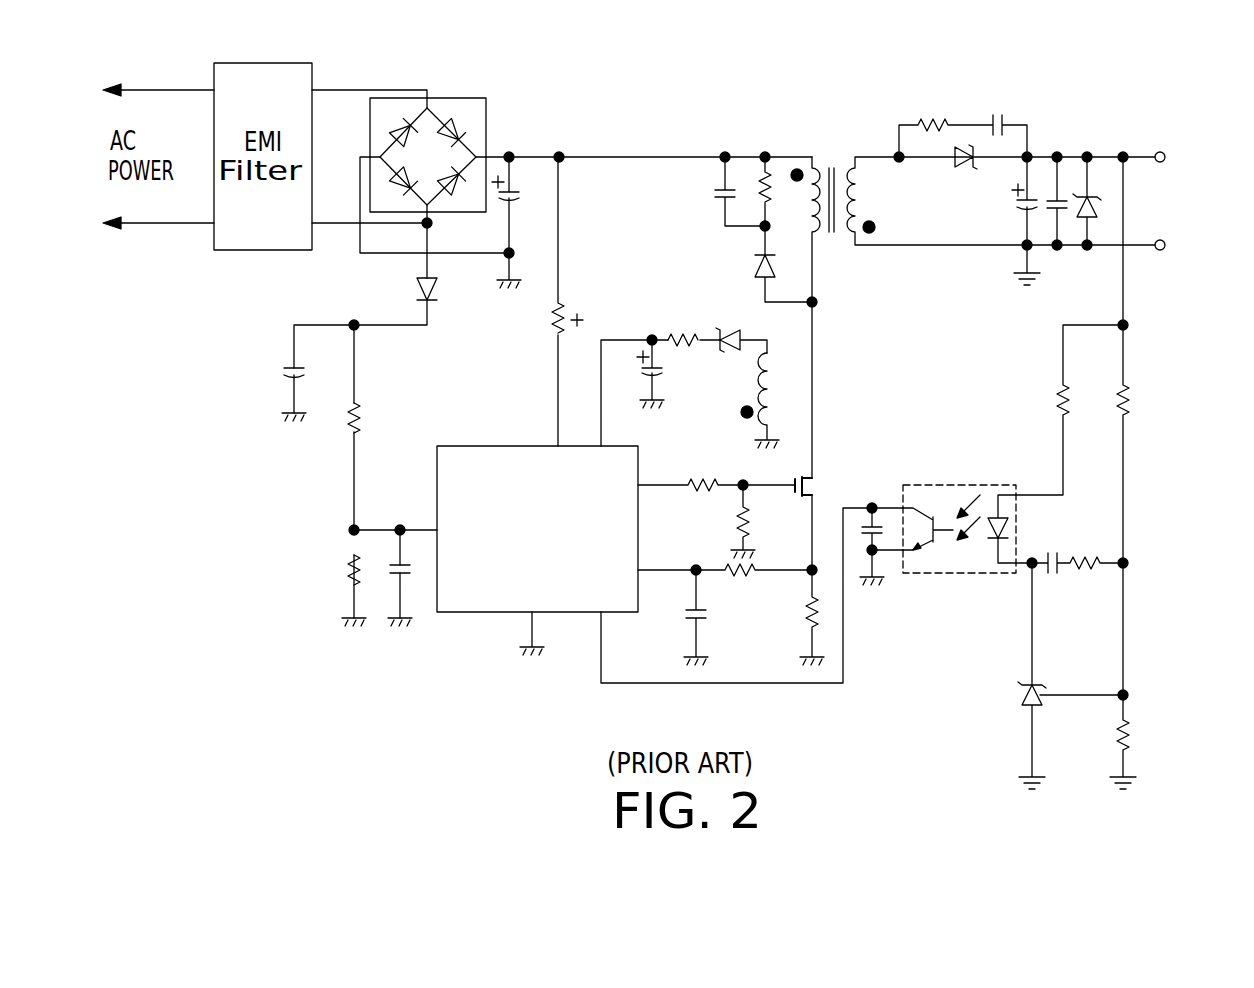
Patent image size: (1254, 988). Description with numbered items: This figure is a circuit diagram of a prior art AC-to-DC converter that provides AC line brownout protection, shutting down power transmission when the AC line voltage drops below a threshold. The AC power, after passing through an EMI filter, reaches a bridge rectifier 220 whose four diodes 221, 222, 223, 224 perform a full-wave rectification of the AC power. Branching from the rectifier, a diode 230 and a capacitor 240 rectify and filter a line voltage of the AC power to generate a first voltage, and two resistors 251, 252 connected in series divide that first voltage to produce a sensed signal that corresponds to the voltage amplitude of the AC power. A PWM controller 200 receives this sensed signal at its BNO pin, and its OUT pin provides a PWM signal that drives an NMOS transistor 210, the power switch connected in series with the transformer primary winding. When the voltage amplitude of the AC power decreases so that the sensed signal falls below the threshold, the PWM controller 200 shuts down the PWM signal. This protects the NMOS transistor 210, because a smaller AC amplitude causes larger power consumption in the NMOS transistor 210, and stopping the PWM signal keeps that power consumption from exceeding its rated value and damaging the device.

The PWM controller 200 is at (497, 446).
The NMOS transistor 210 is at (817, 483).
The bridge rectifier 220 is at (448, 158).
The diode 221 is at (408, 127).
The diode 222 is at (463, 124).
The diode 223 is at (457, 184).
The diode 224 is at (397, 182).
The diode 230 is at (438, 300).
The capacitor 240 is at (290, 367).
The resistor 251 is at (362, 405).
The resistor 252 is at (352, 562).